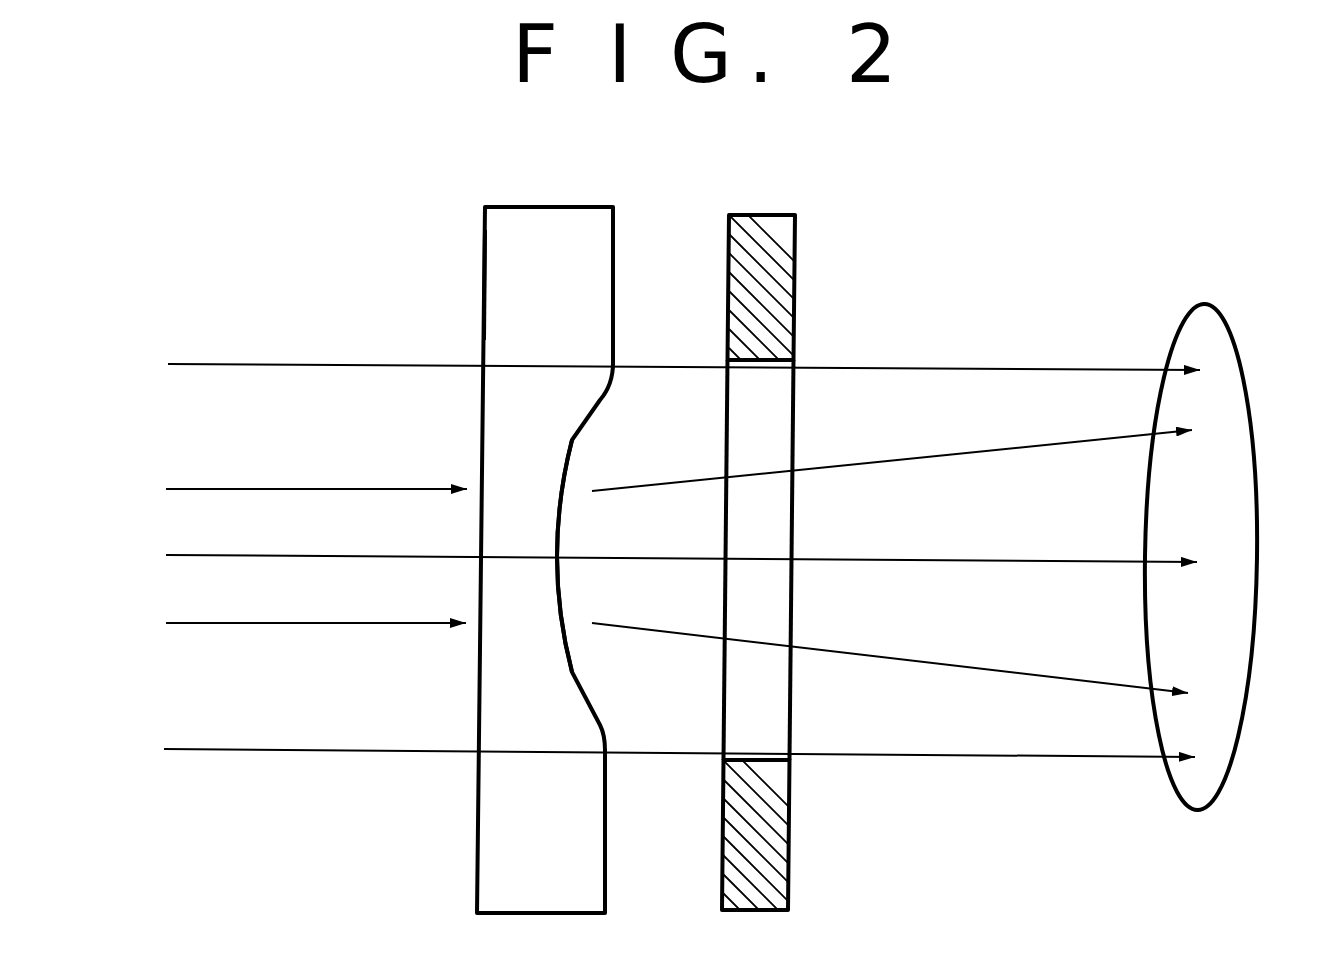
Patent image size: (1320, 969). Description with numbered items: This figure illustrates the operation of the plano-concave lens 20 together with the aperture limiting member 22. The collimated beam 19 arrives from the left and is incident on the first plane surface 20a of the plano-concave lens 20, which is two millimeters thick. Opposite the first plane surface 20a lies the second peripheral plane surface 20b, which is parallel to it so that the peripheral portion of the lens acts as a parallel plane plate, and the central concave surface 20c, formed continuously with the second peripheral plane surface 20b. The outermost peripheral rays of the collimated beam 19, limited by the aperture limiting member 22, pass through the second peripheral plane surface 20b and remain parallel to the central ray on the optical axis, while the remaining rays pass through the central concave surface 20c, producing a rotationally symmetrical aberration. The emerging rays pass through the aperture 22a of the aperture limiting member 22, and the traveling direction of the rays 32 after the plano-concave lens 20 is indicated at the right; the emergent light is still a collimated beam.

The collimated beam 19 is at (301, 364).
The plano-concave lens 20 is at (548, 192).
The first plane surface 20a is at (485, 290).
The second peripheral plane surface 20b is at (613, 297).
The central concave surface 20c is at (558, 573).
The aperture limiting member 22 is at (755, 215).
The aperture 22a is at (764, 362).
The traveling direction of the rays 32 is at (1204, 306).